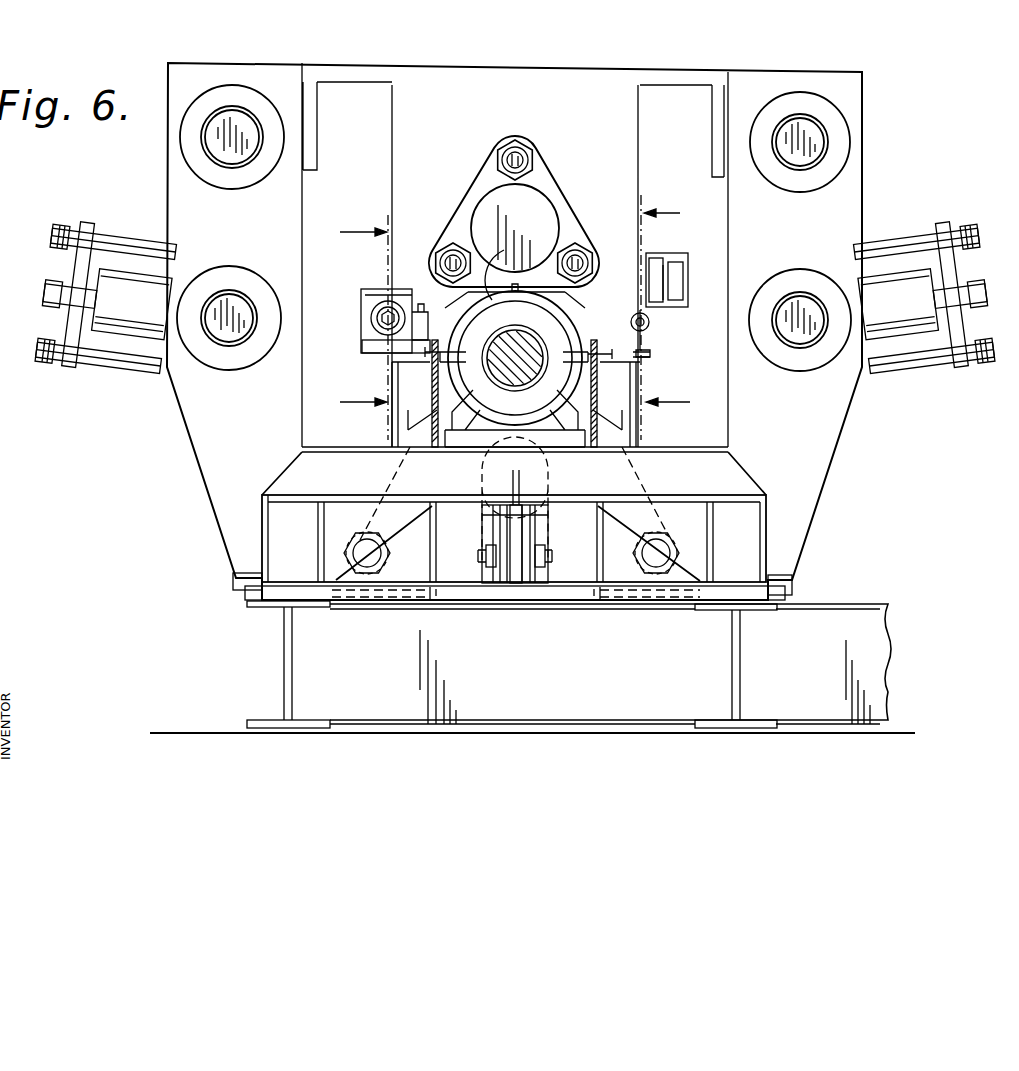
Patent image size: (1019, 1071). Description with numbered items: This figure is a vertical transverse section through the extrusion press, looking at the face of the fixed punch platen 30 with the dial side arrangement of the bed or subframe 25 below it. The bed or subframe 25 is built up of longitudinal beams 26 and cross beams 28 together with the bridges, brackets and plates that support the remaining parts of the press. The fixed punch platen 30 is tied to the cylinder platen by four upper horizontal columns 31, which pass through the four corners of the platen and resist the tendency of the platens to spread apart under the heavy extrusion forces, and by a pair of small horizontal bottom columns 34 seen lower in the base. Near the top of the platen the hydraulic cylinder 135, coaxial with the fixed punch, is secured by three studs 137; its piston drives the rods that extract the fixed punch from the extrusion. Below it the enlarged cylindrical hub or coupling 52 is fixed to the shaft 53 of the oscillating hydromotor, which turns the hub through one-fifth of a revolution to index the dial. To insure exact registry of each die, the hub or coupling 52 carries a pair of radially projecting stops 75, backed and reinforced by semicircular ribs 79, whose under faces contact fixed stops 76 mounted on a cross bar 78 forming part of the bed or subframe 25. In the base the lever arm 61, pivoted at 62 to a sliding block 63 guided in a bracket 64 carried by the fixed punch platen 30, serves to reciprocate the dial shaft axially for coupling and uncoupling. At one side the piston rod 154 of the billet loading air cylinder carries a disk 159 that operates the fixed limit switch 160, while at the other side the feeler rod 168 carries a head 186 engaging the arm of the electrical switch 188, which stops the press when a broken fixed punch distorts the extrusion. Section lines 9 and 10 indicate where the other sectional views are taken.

The fixed punch platen 30 is at (465, 67).
The upper horizontal columns 31 is at (235, 110).
The studs 137 is at (529, 149).
The hydraulic cylinder 135 is at (543, 205).
The hub or coupling 52 is at (492, 327).
The shaft of hydromotor 53 is at (524, 320).
The semicircular ribs 79 is at (575, 318).
The stops 75 is at (572, 332).
The fixed stops 76 is at (449, 440).
The piston rod 154 is at (360, 294).
The disk 159 is at (370, 320).
The limit switch 160 is at (362, 341).
The electrical switch 188 is at (653, 254).
The head 186 is at (643, 327).
The feeler rod 168 is at (650, 353).
The section line 9- 9 is at (364, 322).
The section line 10- 10 is at (665, 314).
The bed or subframe 25 is at (805, 566).
The bottom columns 34 is at (376, 580).
The cross bar 78 is at (543, 445).
The lever arm 61 is at (530, 525).
The pivot 62 is at (487, 560).
The sliding block 63 is at (543, 549).
The bracket 64 is at (518, 583).
The longitudinal beams 26 is at (285, 663).
The cross beams 28 is at (614, 685).